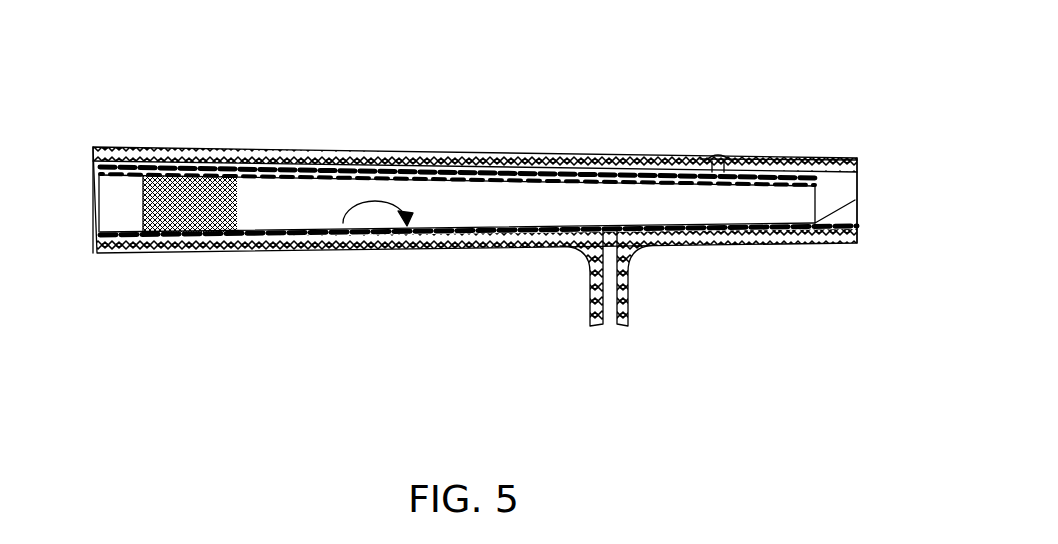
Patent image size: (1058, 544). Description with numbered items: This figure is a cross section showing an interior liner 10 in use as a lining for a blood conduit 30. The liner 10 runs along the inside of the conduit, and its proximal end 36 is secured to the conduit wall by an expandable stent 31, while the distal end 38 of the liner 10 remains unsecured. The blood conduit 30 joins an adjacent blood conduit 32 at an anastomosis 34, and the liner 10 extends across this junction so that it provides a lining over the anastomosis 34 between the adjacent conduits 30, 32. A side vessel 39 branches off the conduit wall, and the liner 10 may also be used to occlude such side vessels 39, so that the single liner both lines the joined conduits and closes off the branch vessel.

The interior liner 10 is at (330, 252).
The blood conduit 30 is at (412, 153).
The stent 31 is at (240, 192).
The blood conduit 32 is at (788, 157).
The anastomosis 34 is at (718, 157).
The proximal end 36 is at (143, 233).
The distal end 38 is at (852, 198).
The side vessel 39 is at (590, 285).